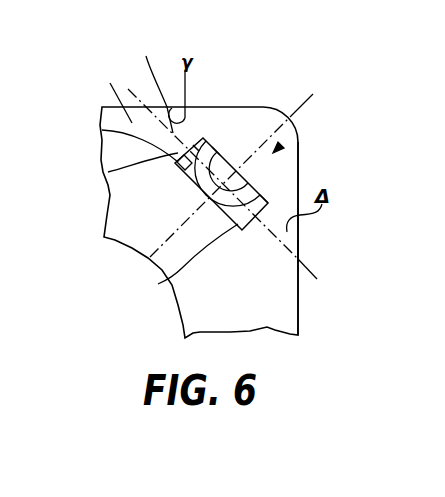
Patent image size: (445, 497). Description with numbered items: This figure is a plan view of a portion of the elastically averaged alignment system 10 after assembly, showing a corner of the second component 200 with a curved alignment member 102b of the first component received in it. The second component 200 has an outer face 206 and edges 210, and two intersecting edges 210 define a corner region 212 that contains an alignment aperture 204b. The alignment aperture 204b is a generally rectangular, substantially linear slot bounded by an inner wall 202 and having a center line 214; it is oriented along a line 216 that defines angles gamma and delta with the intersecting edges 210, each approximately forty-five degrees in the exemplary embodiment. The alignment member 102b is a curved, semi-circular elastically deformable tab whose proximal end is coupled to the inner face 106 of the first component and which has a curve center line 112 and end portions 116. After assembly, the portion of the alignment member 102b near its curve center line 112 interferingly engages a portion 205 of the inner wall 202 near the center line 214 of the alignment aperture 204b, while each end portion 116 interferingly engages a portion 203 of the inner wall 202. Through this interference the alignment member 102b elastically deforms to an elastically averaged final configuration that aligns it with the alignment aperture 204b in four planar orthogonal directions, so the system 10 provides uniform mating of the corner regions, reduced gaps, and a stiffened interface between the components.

The elastically averaged alignment system 10 is at (128, 317).
The alignment member 102b is at (198, 149).
The inner face 106 is at (102, 130).
The curve center line 112 is at (296, 108).
The end portions 116 is at (216, 153).
The second component 200 is at (281, 309).
The inner wall 202 is at (221, 223).
The portion of inner wall 203 is at (194, 181).
The alignment aperture 204b is at (169, 279).
The portion of inner wall 205 is at (108, 172).
The outer face 206 is at (110, 83).
The edges 210 is at (356, 269).
The corner region 212 is at (281, 145).
The center line 214 is at (362, 31).
The line 216 is at (298, 253).